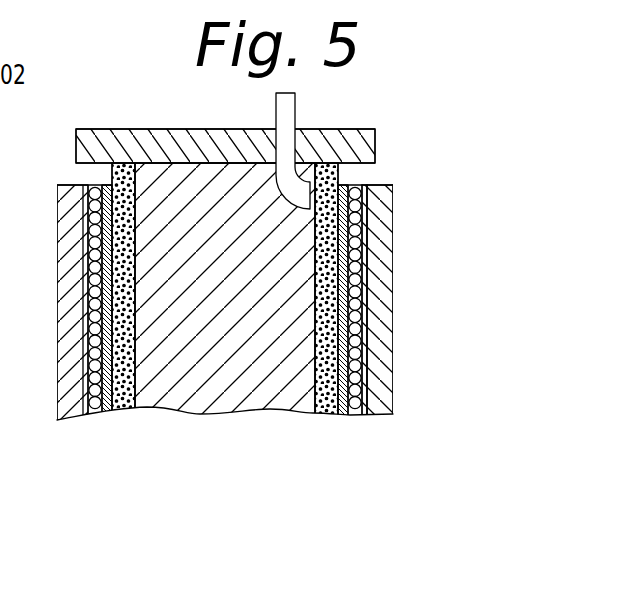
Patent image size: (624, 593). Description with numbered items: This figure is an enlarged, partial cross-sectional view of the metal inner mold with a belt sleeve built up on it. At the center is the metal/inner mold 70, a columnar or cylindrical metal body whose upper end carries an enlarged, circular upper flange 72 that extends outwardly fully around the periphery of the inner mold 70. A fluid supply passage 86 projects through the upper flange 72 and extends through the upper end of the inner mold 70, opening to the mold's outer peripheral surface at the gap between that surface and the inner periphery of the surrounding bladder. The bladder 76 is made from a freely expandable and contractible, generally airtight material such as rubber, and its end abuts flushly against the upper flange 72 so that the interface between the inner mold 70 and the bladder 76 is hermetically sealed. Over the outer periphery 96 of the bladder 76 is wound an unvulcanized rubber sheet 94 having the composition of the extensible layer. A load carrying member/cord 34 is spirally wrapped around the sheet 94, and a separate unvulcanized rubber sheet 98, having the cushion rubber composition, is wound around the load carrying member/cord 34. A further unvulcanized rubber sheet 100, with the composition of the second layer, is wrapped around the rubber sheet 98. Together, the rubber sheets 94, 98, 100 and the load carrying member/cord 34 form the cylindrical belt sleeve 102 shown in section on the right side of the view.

The metal/inner mold 70 is at (204, 345).
The upper flange 72 is at (178, 137).
The fluid supply passage 86 is at (288, 113).
The bladder 76 is at (133, 265).
The outer periphery of the bladder 96 is at (339, 178).
The unvulcanized rubber sheet 98 is at (350, 250).
The unvulcanized rubber sheet 94 is at (352, 375).
The load carrying member/cord 34 is at (372, 297).
The unvulcanized rubber sheet 100 is at (469, 388).
The belt sleeve 102 is at (425, 284).